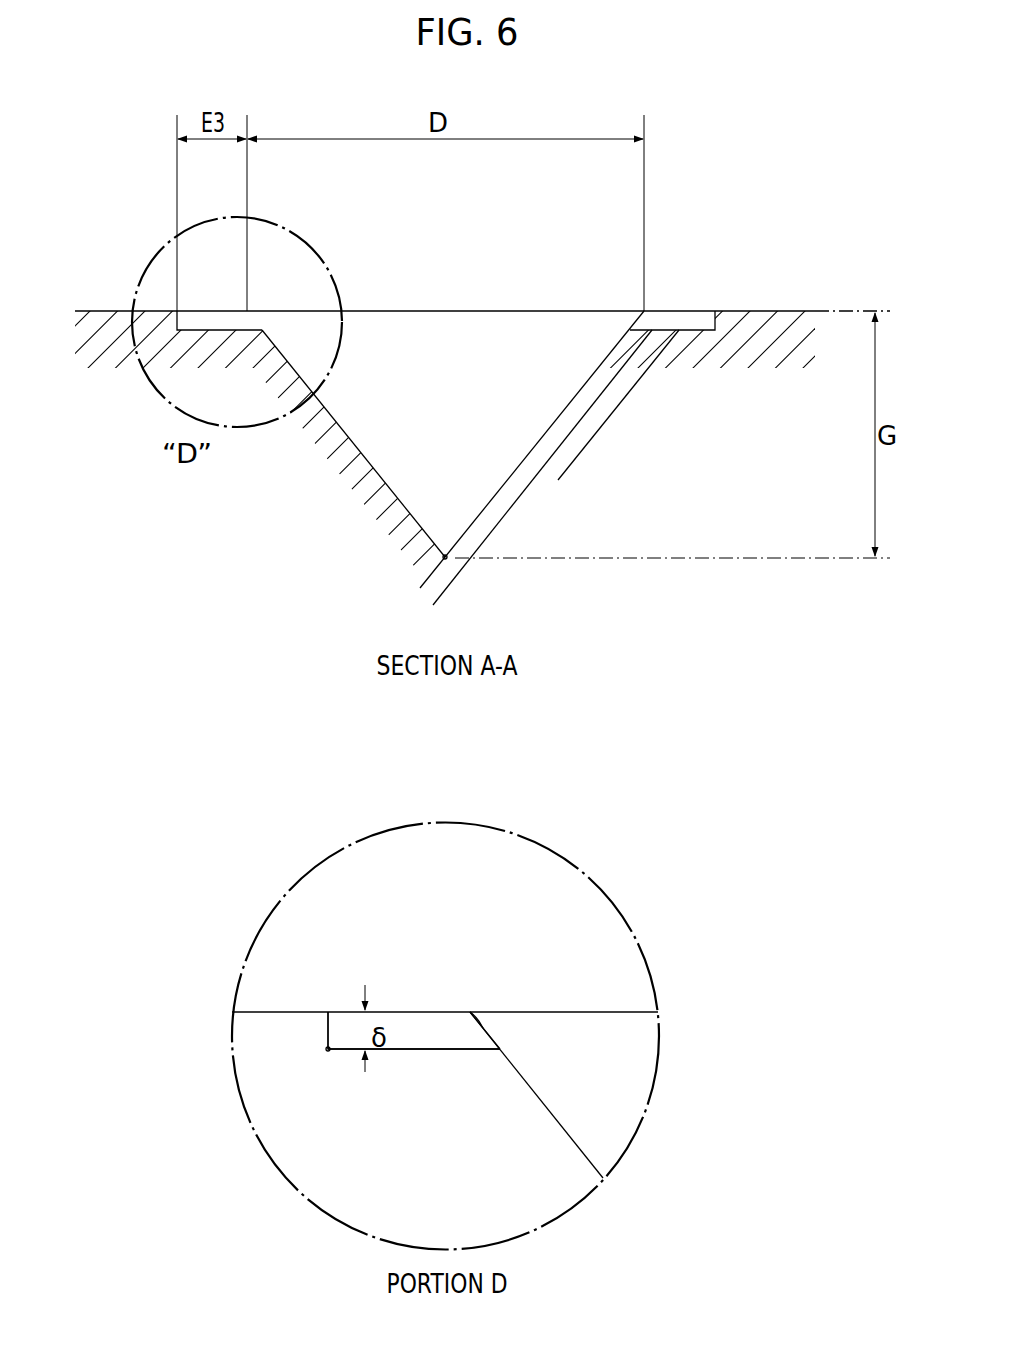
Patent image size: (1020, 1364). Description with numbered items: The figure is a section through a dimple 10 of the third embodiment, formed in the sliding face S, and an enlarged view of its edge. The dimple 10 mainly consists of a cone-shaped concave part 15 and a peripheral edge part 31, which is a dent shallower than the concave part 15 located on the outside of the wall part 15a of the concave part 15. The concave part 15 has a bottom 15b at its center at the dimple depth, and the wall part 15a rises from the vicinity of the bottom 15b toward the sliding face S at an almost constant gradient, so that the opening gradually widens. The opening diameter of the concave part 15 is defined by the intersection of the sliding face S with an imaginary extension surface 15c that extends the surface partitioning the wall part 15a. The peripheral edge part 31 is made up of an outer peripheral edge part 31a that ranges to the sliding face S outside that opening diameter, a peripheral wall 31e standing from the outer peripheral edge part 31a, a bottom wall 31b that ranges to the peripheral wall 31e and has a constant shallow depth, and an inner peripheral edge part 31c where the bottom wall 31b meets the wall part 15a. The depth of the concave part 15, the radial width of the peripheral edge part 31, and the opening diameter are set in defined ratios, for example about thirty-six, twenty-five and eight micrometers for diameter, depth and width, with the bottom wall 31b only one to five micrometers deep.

The dimple 10 is at (318, 213).
The concave part 15 is at (437, 304).
The wall part 15a is at (350, 432).
The bottom 15b is at (442, 562).
The extension surface 15c is at (472, 1020).
The peripheral edge part 31 is at (228, 314).
The outer peripheral edge part 31a is at (329, 1011).
The bottom wall 31b is at (413, 1048).
The inner peripheral edge part 31c is at (502, 1048).
The peripheral wall 31e is at (330, 1042).
The sliding face S is at (104, 305).